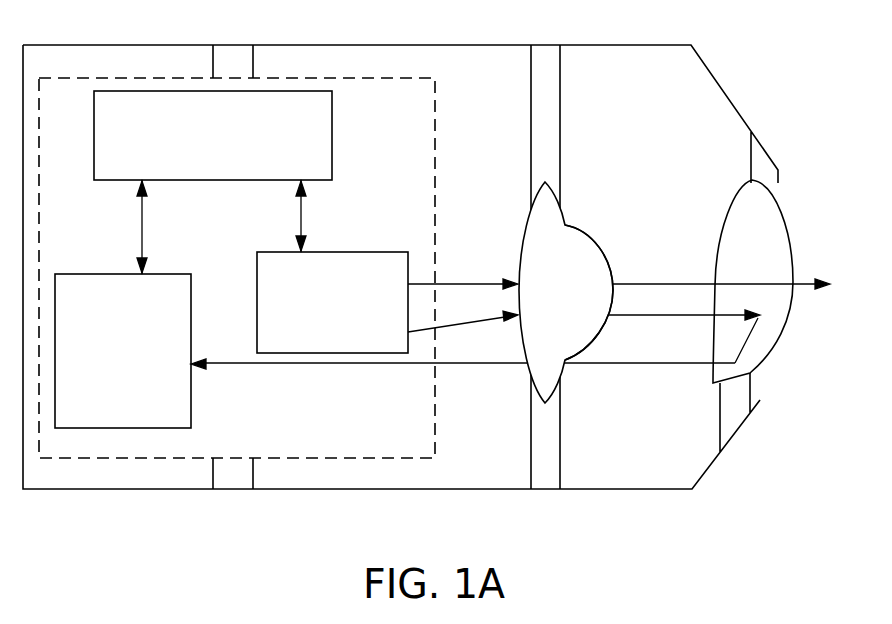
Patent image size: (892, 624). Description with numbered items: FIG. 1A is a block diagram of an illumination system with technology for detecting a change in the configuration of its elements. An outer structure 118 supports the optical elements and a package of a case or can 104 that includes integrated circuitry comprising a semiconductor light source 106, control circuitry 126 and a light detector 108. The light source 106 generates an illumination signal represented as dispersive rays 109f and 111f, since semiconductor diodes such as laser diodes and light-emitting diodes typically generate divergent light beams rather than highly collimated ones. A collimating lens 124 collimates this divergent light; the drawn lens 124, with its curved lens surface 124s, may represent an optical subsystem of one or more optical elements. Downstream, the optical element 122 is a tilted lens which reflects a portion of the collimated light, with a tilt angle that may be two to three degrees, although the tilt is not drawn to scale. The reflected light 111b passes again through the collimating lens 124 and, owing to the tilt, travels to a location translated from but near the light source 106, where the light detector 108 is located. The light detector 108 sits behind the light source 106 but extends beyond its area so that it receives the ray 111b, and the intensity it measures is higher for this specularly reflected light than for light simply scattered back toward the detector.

The outer structure 118 is at (213, 63).
The case or can 104 is at (435, 436).
The control circuitry 126 is at (213, 182).
The semiconductor light source 106 is at (332, 302).
The light detector 108 is at (123, 351).
The collimating lens 124 is at (520, 228).
The lens surface 124s is at (600, 246).
The tilted optical element 122 is at (737, 207).
The dispersive ray 109f is at (473, 286).
The dispersive ray 111f is at (453, 325).
The reflected light 111b is at (262, 367).